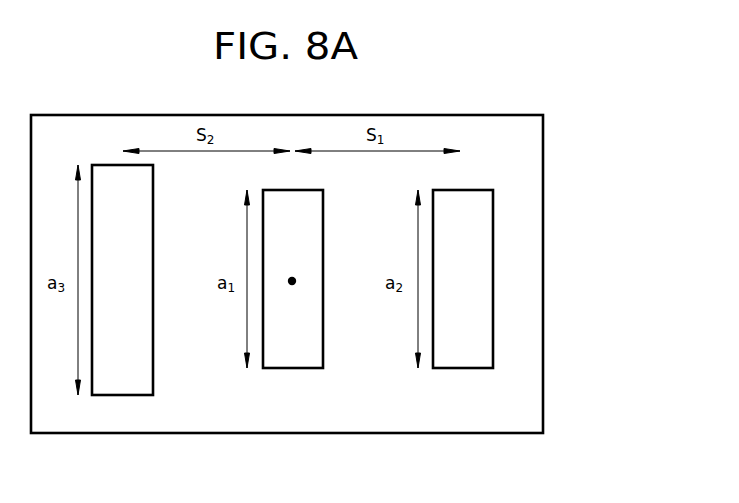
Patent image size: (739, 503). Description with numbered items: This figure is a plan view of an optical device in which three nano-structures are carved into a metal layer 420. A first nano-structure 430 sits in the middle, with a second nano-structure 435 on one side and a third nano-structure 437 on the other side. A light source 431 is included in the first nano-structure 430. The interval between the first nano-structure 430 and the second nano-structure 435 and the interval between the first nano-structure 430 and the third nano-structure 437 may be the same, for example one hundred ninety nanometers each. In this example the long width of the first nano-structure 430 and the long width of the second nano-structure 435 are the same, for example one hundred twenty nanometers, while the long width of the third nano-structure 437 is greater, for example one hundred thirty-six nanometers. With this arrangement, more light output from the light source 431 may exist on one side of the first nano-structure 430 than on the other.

The metal layer 420 is at (537, 281).
The third nano-structure 437 is at (122, 395).
The first nano-structure 430 is at (293, 368).
The light source 431 is at (292, 281).
The second nano-structure 435 is at (463, 368).